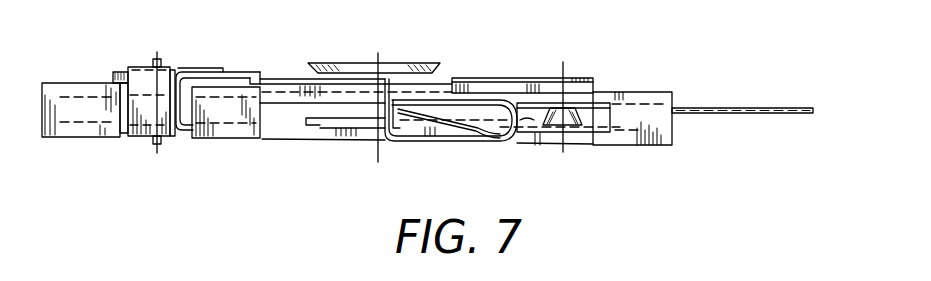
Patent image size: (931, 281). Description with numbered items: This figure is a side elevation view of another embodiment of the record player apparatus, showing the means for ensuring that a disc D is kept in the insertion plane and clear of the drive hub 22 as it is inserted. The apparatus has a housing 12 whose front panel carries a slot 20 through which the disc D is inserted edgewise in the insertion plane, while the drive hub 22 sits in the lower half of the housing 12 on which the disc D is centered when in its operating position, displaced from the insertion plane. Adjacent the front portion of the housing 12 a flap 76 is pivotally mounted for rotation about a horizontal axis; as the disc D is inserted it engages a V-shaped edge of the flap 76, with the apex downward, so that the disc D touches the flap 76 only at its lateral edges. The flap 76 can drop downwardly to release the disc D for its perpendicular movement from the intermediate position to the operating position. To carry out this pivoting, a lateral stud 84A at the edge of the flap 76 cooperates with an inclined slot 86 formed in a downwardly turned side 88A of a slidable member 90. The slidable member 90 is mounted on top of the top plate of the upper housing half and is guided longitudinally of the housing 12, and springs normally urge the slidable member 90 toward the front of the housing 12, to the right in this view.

The housing 12 is at (659, 91).
The slot 20 is at (668, 116).
The drive hub 22 is at (320, 128).
The flap 76 is at (532, 143).
The lateral stud 84A is at (438, 104).
The inclined slot 86 is at (470, 143).
The downwardly turned side 88A is at (453, 143).
The slidable member 90 is at (458, 72).
The disc D is at (780, 115).